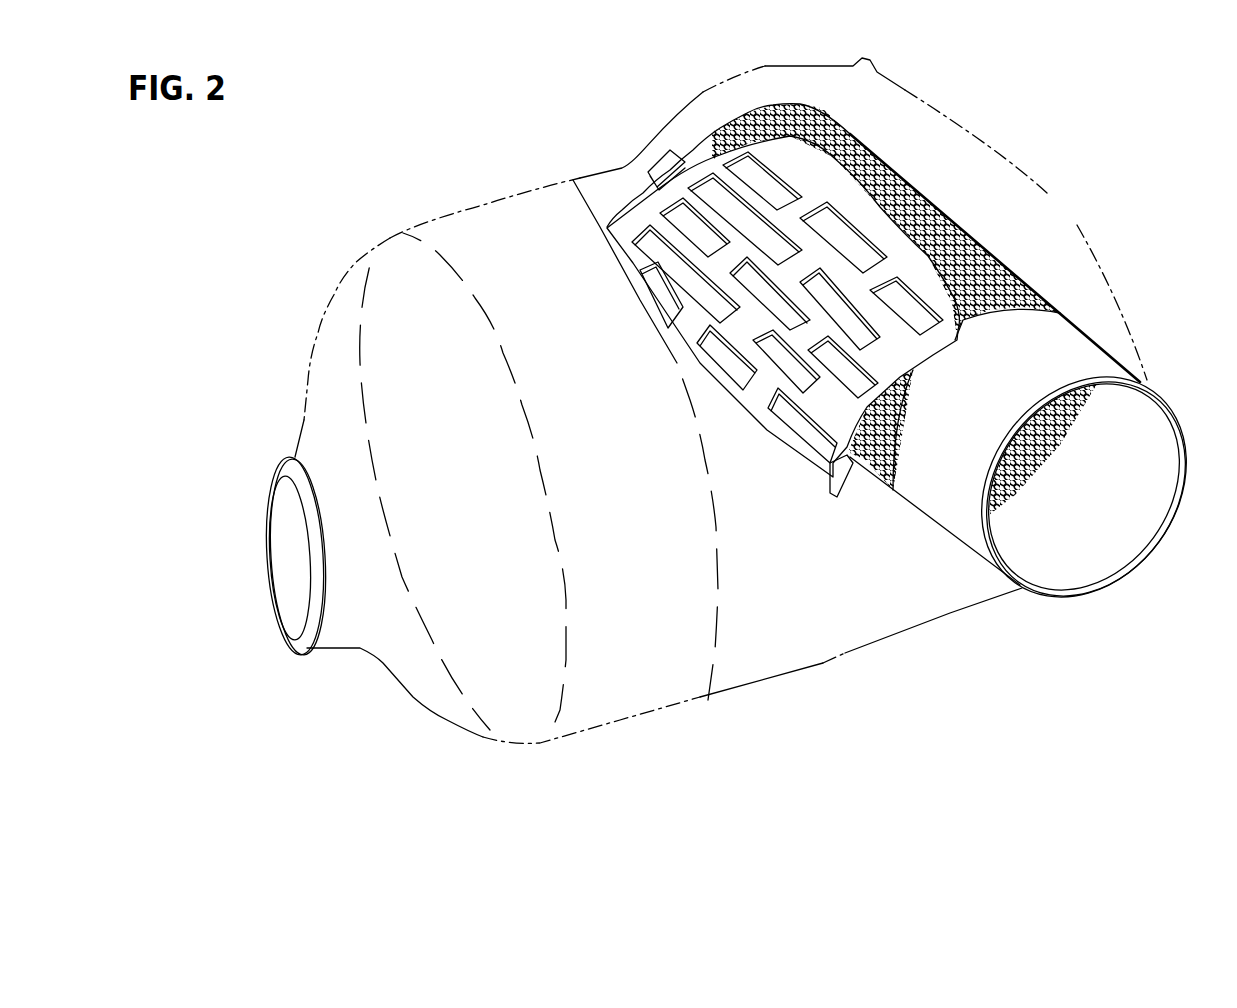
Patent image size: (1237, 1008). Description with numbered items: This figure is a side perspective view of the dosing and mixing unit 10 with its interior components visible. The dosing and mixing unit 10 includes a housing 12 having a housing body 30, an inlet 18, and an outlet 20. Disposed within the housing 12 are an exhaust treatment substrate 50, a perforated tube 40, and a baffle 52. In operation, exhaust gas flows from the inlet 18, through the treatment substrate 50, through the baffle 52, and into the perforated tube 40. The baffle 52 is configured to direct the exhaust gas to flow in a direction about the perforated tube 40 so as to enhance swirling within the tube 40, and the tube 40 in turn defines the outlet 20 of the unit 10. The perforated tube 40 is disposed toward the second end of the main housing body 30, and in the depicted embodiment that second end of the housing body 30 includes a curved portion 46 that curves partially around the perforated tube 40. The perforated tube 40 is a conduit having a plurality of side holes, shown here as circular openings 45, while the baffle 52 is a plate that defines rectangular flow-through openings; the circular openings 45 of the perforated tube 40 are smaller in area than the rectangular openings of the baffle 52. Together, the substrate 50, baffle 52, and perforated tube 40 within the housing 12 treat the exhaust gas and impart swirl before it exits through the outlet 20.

The dosing and mixing unit 10 is at (478, 193).
The housing 12 is at (950, 617).
The inlet 18 is at (287, 535).
The outlet 20 is at (1152, 548).
The housing body 30 is at (834, 676).
The perforated tube 40 is at (896, 322).
The openings 45 is at (883, 180).
The curved portion 46 is at (1061, 207).
The exhaust treatment substrate 50 is at (783, 467).
The baffle 52 is at (753, 407).